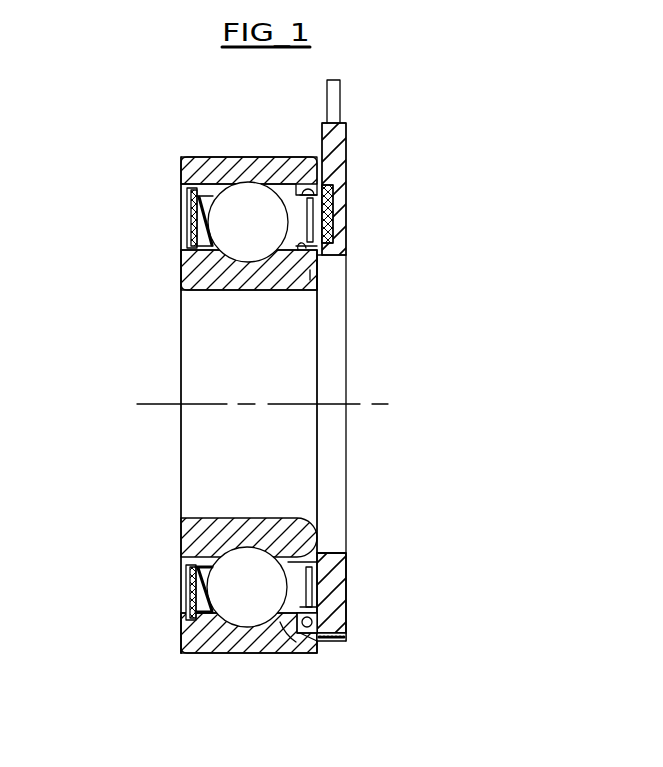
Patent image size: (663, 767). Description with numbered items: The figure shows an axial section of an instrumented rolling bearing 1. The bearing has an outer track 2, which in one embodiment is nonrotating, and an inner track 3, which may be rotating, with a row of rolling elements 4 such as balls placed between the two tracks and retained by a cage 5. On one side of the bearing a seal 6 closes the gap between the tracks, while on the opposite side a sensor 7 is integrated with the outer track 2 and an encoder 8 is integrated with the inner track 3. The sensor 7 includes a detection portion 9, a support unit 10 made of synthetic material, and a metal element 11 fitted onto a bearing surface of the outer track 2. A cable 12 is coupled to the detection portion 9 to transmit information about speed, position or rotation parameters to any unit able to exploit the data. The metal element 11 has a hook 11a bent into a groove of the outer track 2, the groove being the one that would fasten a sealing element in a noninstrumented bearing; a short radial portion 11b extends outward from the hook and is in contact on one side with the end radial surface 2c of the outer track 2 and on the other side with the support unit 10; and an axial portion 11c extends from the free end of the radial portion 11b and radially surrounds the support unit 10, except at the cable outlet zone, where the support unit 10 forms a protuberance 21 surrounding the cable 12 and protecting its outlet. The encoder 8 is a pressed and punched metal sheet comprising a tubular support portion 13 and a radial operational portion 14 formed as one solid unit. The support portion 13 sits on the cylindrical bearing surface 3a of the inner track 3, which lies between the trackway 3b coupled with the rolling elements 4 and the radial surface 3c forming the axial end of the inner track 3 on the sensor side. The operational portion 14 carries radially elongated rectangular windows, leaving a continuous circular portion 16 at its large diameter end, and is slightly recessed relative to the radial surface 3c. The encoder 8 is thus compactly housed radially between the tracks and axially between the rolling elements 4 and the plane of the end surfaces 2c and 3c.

The rolling bearing 1 is at (152, 118).
The outer track 2 is at (234, 162).
The end radial surface of the outer track 2c is at (312, 190).
The inner track 3 is at (332, 530).
The cylindrical bearing surface 3a is at (303, 253).
The trackway 3b is at (238, 262).
The radial surface 3c is at (312, 274).
The rolling elements 4 is at (256, 233).
The cage 5 is at (193, 212).
The seal 6 is at (193, 228).
The sensor 7 is at (356, 590).
The encoder 8 is at (327, 246).
The detection portion 9 is at (331, 214).
The support unit 10 is at (338, 556).
The metal element 11 is at (323, 641).
The hook 11a is at (305, 625).
The radial portion 11b is at (308, 620).
The axial portion 11c is at (320, 641).
The cable 12 is at (337, 103).
The support portion 13 is at (303, 532).
The operational portion 14 is at (312, 606).
The continuous circular portion 16 is at (293, 632).
The protuberance 21 is at (340, 150).